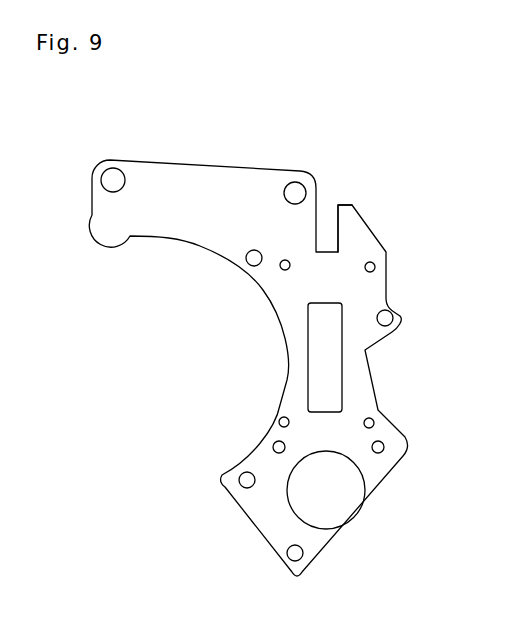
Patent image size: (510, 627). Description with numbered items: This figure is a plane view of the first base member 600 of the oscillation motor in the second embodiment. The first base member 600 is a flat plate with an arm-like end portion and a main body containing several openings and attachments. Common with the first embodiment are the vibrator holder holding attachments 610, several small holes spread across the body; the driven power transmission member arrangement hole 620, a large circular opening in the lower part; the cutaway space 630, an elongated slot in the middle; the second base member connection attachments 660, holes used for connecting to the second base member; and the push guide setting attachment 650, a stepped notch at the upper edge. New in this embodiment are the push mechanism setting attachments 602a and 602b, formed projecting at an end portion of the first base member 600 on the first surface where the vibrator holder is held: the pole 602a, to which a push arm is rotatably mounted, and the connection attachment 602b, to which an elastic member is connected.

The first base member 600 is at (56, 100).
The pole 602a is at (291, 183).
The connection attachment 602b is at (107, 180).
The vibrator holder holding attachment 610 is at (283, 270).
The driven power transmission member arrangement hole 620 is at (360, 506).
The cutaway space 630 is at (342, 366).
The push guide setting attachment 650 is at (328, 205).
The second base member connection attachment 660 is at (249, 262).